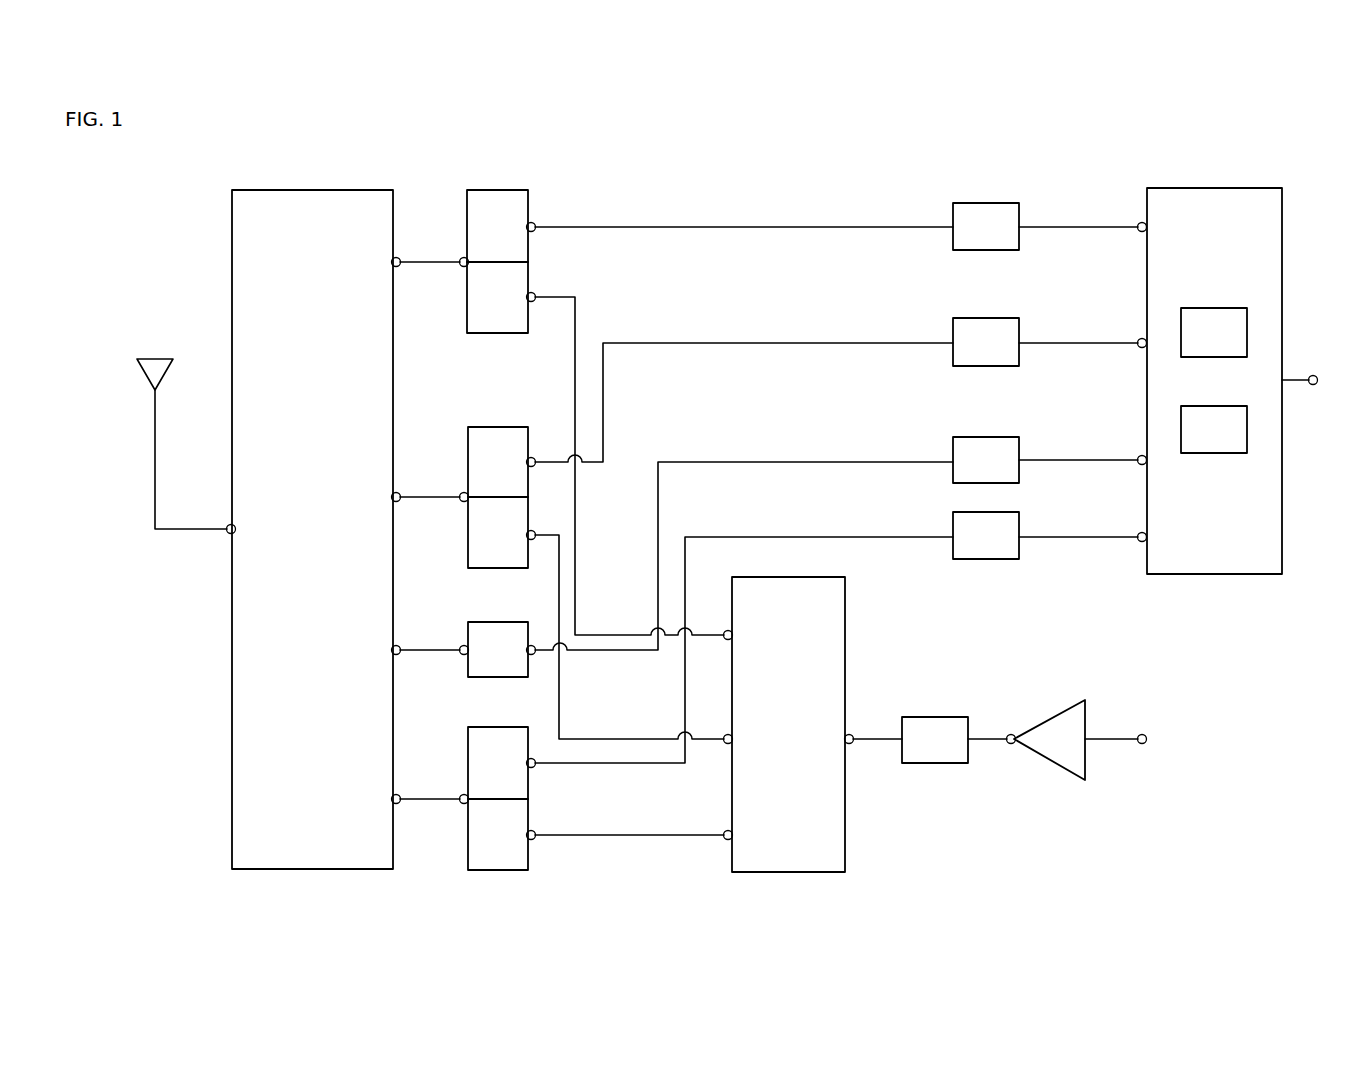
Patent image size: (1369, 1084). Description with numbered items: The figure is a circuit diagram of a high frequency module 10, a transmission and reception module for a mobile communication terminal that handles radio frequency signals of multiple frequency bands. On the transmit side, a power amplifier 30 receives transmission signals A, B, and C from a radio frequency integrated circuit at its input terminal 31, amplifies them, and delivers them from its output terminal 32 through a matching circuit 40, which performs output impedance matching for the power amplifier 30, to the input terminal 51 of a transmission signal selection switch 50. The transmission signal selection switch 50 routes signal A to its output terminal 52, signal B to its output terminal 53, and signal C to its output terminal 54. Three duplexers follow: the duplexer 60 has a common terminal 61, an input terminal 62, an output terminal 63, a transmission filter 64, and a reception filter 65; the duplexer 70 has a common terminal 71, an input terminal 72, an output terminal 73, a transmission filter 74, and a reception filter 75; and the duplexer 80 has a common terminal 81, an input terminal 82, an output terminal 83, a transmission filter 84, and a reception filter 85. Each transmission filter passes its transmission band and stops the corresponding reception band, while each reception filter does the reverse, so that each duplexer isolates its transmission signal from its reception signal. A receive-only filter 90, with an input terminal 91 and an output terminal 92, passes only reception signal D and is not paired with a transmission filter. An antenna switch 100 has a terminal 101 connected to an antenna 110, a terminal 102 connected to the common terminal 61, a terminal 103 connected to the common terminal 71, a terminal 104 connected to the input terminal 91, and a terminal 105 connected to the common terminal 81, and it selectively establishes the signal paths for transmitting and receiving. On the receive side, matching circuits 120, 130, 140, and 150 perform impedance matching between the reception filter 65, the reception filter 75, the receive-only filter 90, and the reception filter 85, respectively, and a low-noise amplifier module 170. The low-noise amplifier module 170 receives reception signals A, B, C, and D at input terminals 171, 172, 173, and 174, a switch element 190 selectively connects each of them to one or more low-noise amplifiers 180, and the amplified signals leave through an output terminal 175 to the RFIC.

The high frequency module 10 is at (938, 132).
The power amplifier 30 is at (1050, 705).
The input terminal 31 is at (1145, 735).
The output terminal 32 is at (1010, 745).
The matching circuit 40 is at (937, 716).
The transmission signal selection switch 50 is at (795, 874).
The input terminal 51 is at (853, 735).
The output terminal 52 is at (724, 631).
The output terminal 53 is at (724, 736).
The output terminal 54 is at (724, 831).
The duplexer 60 is at (506, 188).
The common terminal 61 is at (462, 257).
The input terminal 62 is at (535, 302).
The output terminal 63 is at (537, 225).
The transmission filter 64 is at (487, 308).
The reception filter 65 is at (487, 215).
The duplexer 70 is at (506, 426).
The common terminal 71 is at (462, 492).
The input terminal 72 is at (534, 540).
The output terminal 73 is at (537, 460).
The transmission filter 74 is at (483, 543).
The reception filter 75 is at (485, 450).
The duplexer 80 is at (498, 726).
The common terminal 81 is at (462, 794).
The input terminal 82 is at (536, 840).
The output terminal 83 is at (537, 768).
The transmission filter 84 is at (485, 846).
The reception filter 85 is at (487, 752).
The receive-only filter 90 is at (497, 620).
The input terminal 91 is at (461, 646).
The output terminal 92 is at (534, 656).
The antenna switch 100 is at (325, 210).
The terminal 101 is at (226, 534).
The terminal 102 is at (398, 266).
The terminal 103 is at (398, 502).
The terminal 104 is at (398, 655).
The terminal 105 is at (398, 804).
The antenna 110 is at (158, 425).
The matching circuit 120 is at (985, 203).
The matching circuit 130 is at (985, 318).
The matching circuit 140 is at (985, 437).
The matching circuit 150 is at (1000, 512).
The low-noise amplifier module 170 is at (1243, 187).
The input terminal 171 is at (1138, 223).
The input terminal 172 is at (1138, 340).
The input terminal 173 is at (1138, 456).
The input terminal 174 is at (1138, 541).
The output terminal 175 is at (1315, 376).
The low-noise amplifier 180 is at (1217, 307).
The switch element 190 is at (1217, 455).